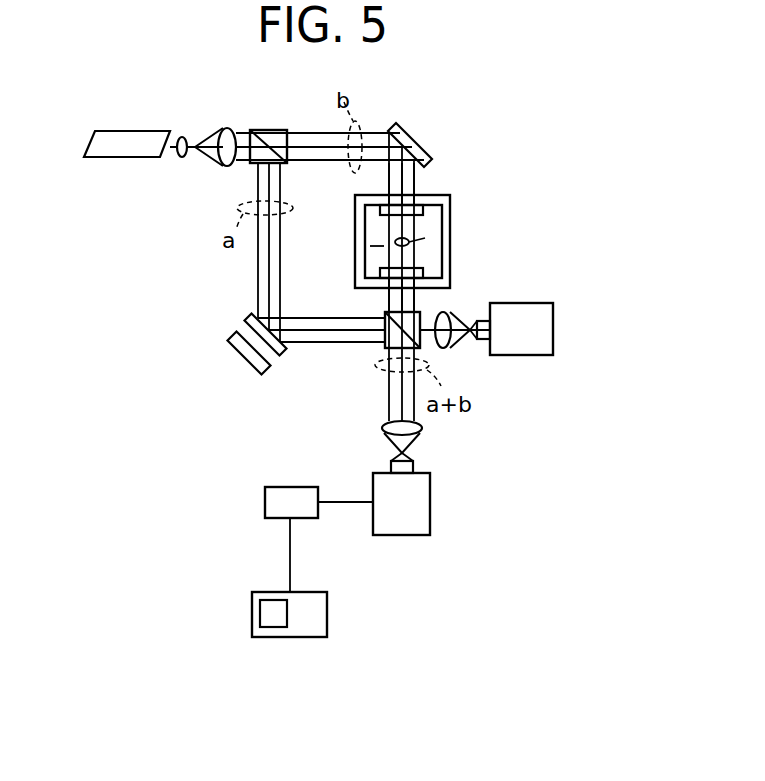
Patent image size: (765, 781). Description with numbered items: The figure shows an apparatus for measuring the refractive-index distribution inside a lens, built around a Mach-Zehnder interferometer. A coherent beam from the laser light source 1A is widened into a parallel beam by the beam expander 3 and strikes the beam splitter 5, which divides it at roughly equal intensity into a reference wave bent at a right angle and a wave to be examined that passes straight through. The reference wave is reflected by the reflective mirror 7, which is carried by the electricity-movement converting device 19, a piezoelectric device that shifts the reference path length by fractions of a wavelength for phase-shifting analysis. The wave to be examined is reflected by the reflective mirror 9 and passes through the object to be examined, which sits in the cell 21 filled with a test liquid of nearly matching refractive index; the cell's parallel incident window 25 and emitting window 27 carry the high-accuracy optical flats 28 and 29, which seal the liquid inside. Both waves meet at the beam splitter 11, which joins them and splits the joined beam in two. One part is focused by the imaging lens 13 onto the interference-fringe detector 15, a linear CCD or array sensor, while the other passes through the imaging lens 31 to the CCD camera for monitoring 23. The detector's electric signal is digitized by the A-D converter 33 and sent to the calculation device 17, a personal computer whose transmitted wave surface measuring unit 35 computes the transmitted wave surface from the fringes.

The laser light source 1A is at (115, 157).
The beam expander 3 is at (205, 166).
The beam splitter 5 is at (280, 130).
The reflective mirror 7 is at (248, 314).
The reflective mirror 9 is at (425, 150).
The beam splitter 11 is at (423, 316).
The imaging lens 13 is at (383, 430).
The interference-fringe detector 15 is at (430, 513).
The calculation device 17 is at (327, 612).
The electricity-movement converting device 19 is at (247, 360).
The cell 21 is at (355, 247).
The CCD camera for monitoring 23 is at (525, 355).
The incident window 25 is at (395, 199).
The emitting window 27 is at (395, 285).
The optical flat 28 is at (380, 208).
The optical flat 29 is at (380, 275).
The imaging lens 31 is at (445, 348).
The A-D converter 33 is at (298, 487).
The transmitted wave surface measuring unit 35 is at (270, 600).